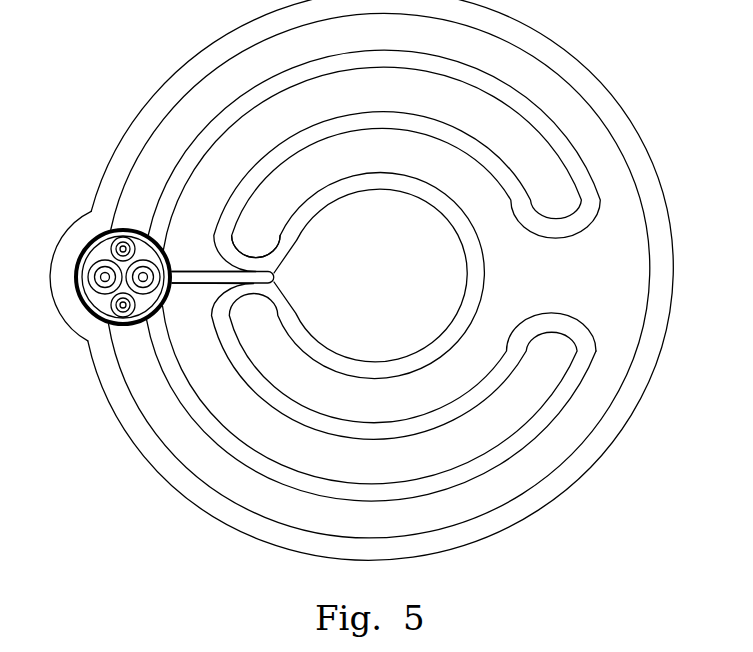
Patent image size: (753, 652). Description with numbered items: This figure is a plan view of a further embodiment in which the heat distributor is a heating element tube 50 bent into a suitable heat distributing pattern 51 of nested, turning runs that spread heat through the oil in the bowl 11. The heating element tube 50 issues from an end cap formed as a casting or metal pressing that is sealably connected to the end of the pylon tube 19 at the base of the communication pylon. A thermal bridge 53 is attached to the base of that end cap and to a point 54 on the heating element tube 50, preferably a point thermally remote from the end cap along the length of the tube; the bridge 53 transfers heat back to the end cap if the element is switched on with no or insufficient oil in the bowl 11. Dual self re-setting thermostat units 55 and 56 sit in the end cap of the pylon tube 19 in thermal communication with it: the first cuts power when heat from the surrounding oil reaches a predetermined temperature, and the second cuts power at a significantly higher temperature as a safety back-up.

The bowl 11 is at (589, 72).
The pylon tube 19 is at (88, 308).
The heating element tube 50 is at (416, 198).
The heat distributing pattern 51 is at (587, 436).
The thermal bridge 53 is at (280, 268).
The point on the heating element tube 54 is at (256, 248).
The thermostat unit 55 is at (90, 278).
The thermostat unit 56 is at (167, 263).